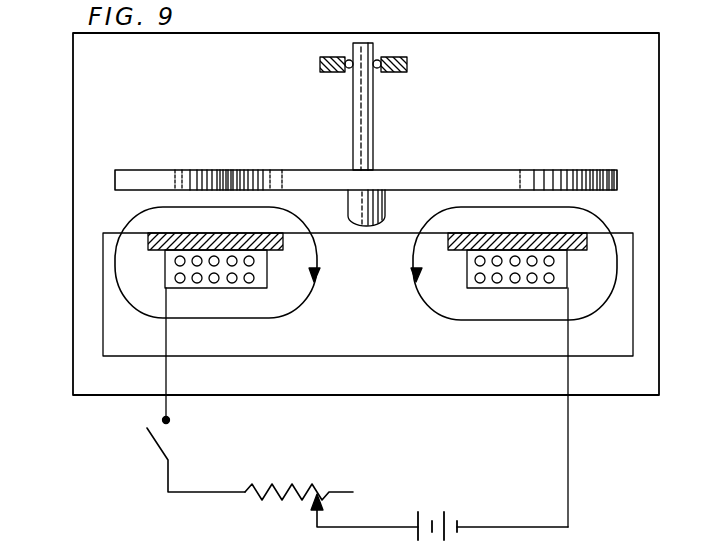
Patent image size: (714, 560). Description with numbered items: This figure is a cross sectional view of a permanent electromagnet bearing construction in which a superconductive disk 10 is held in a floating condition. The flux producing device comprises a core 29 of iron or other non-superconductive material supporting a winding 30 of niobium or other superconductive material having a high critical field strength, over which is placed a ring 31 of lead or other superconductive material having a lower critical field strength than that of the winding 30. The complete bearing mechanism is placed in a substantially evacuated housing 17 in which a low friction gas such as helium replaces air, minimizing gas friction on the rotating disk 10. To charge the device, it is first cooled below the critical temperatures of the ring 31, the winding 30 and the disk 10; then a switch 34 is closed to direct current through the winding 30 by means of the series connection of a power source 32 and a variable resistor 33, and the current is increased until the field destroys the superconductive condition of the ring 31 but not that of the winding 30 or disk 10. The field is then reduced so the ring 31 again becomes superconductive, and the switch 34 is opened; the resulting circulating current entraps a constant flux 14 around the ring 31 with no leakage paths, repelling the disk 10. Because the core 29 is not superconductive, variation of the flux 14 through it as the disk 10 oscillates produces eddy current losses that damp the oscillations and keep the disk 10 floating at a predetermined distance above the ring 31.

The disk 10 is at (440, 181).
The flux 14 is at (118, 283).
The housing 17 is at (73, 114).
The core 29 is at (583, 343).
The winding 30 is at (480, 279).
The ring 31 is at (589, 243).
The power source 32 is at (435, 512).
The variable resistor 33 is at (312, 505).
The switch 34 is at (165, 441).